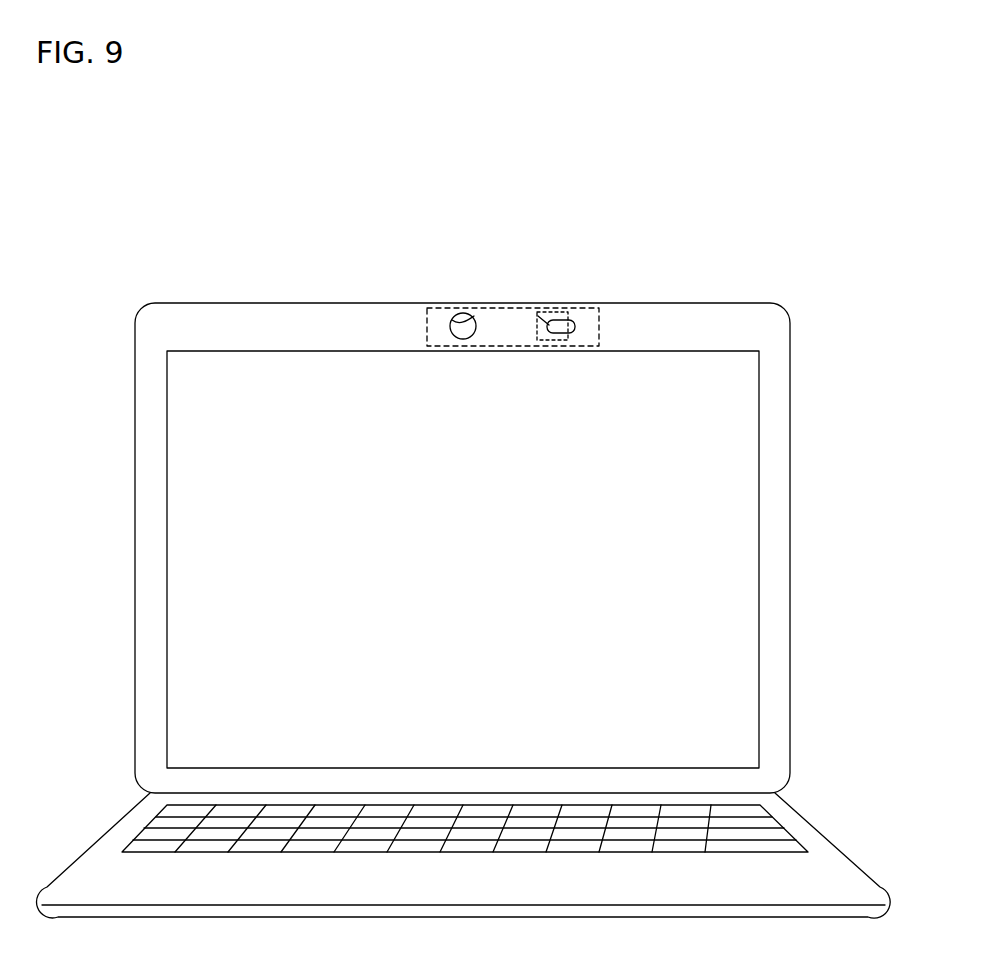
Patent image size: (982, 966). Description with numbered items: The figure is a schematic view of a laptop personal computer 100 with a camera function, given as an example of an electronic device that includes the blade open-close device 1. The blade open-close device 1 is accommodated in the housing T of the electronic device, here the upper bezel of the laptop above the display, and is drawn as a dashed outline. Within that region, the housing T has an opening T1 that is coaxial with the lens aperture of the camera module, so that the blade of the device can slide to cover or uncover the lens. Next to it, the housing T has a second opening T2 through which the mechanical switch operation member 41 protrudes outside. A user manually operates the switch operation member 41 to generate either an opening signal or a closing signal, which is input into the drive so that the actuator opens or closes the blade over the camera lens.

The laptop personal computer 100 is at (773, 253).
The housing T is at (320, 302).
The blade open-close device 1 is at (493, 302).
The opening T1 is at (463, 312).
The opening T2 is at (553, 311).
The mechanical switch operation member 41 is at (574, 326).